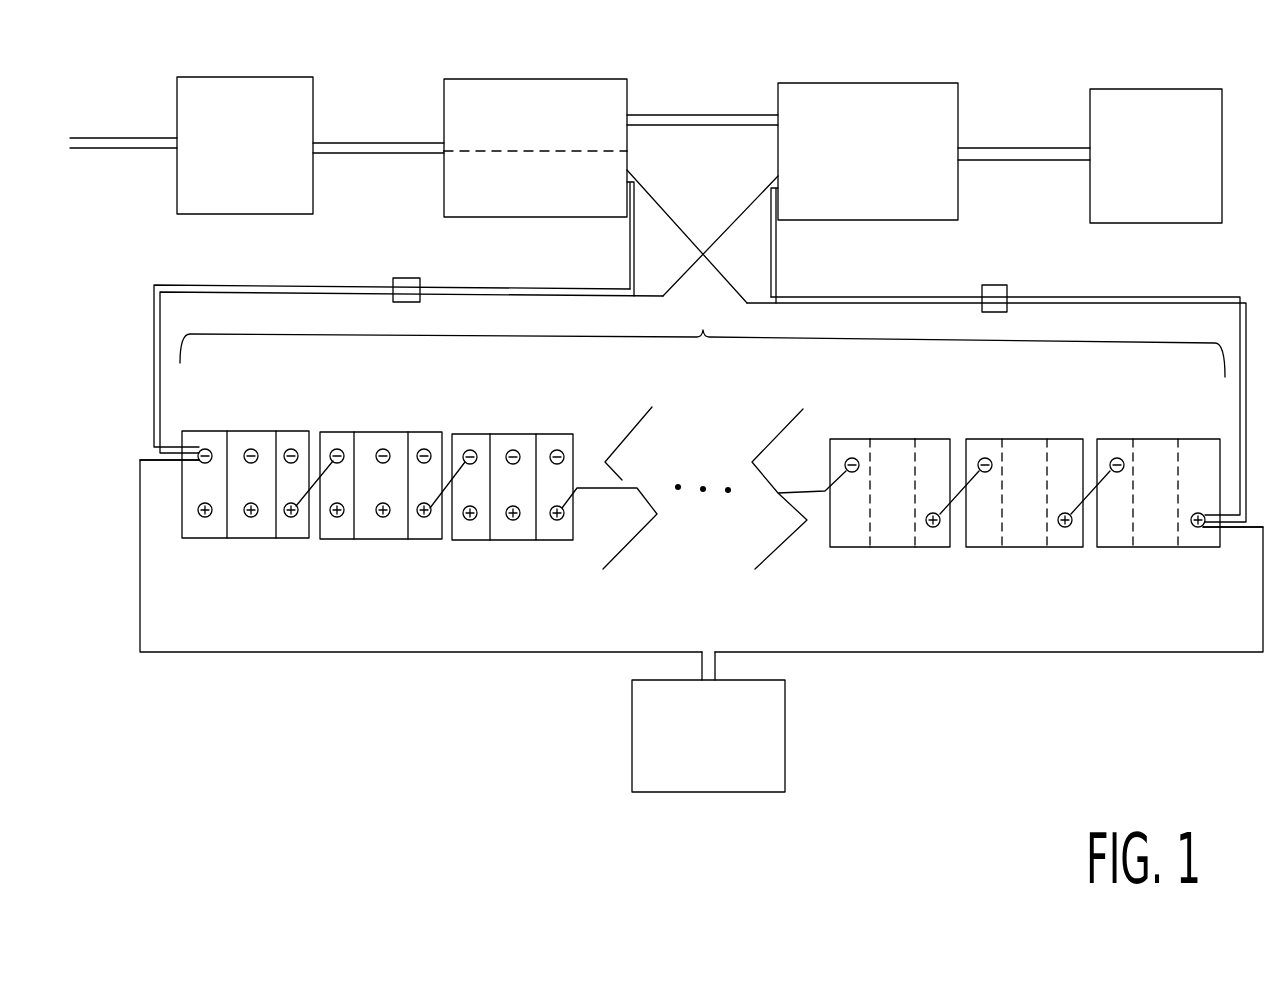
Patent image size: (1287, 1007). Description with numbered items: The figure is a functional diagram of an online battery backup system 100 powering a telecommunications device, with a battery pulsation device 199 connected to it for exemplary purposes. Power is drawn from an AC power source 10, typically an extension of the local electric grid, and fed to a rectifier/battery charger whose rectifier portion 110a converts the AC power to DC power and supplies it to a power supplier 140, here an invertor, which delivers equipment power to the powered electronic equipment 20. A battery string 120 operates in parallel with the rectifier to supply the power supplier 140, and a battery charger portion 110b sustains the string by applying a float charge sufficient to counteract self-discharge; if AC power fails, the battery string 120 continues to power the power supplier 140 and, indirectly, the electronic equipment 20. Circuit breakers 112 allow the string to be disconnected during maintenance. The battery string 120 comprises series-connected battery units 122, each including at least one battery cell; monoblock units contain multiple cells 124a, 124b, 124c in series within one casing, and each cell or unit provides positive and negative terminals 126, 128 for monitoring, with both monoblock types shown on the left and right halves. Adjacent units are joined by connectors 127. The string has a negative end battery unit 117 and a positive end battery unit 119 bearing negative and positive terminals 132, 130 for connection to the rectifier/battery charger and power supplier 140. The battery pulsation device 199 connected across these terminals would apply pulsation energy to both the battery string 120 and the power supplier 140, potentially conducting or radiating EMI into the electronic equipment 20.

The online battery backup system 100 is at (1033, 72).
The AC power source 10 is at (245, 145).
The rectifier portion 110a is at (535, 115).
The battery charger portion 110b is at (535, 184).
The power supplier 140 is at (868, 151).
The powered electronic equipment 20 is at (1156, 156).
The circuit breakers 112 is at (401, 278).
The battery string 120 is at (702, 337).
The battery units 122 is at (1222, 416).
The battery cell 124a is at (461, 434).
The battery cell 124b is at (503, 434).
The battery cell 124c is at (547, 434).
The positive terminal 126 is at (421, 506).
The negative terminal 128 is at (293, 447).
The inter-battery connector 127 is at (315, 475).
The negative end battery unit 117 is at (246, 540).
The positive end battery unit 119 is at (1158, 552).
The negative terminal 132 is at (203, 463).
The positive terminal 130 is at (1205, 530).
The battery pulsation device 199 is at (708, 722).